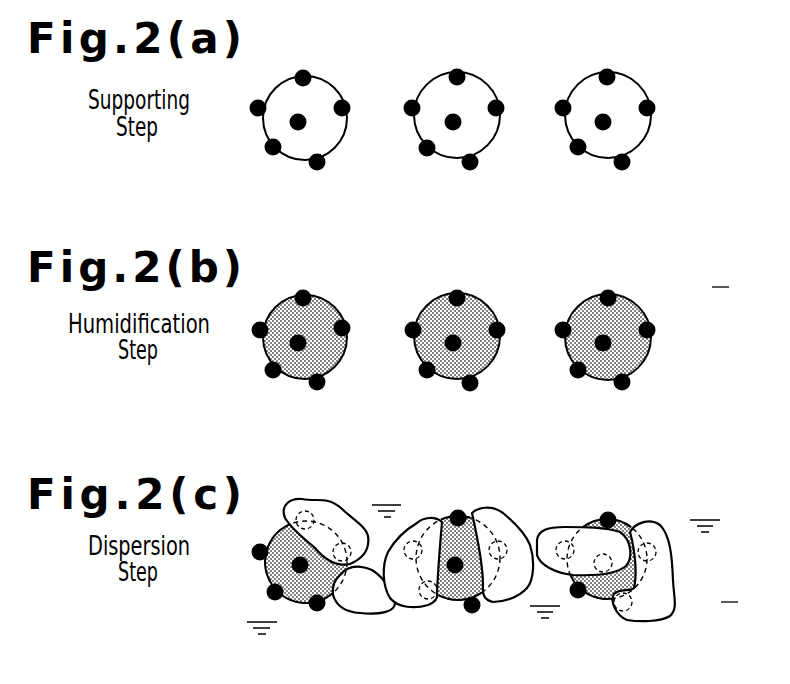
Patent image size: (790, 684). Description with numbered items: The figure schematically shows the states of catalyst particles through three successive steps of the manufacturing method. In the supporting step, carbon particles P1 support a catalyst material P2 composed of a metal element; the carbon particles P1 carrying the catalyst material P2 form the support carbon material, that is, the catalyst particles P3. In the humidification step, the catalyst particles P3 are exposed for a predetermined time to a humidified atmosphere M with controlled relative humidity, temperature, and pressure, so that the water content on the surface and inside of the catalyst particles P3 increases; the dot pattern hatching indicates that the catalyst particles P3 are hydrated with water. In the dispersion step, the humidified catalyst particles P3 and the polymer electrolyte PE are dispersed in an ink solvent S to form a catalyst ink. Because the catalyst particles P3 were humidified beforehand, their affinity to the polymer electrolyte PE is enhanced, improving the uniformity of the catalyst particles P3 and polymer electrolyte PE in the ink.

In FIG. 2A, the carbon particles P1 is at (328, 97).
In FIG. 2B, the carbon particles P1 is at (328, 318).
In FIG. 2C, the carbon particles P1 is at (630, 524).
In FIG. 2A, the catalyst material P2 is at (305, 71).
In FIG. 2B, the catalyst material P2 is at (305, 292).
In FIG. 2C, the catalyst material P2 is at (607, 513).
In FIG. 2A, the catalyst particles P3 is at (477, 121).
In FIG. 2B, the catalyst particles P3 is at (478, 343).
In FIG. 2C, the catalyst particles P3 is at (477, 568).
In FIG. 2B, the humidified atmosphere M is at (722, 275).
In FIG. 2C, the ink solvent S is at (492, 569).
In FIG. 2C, the polymer electrolyte PE is at (648, 621).